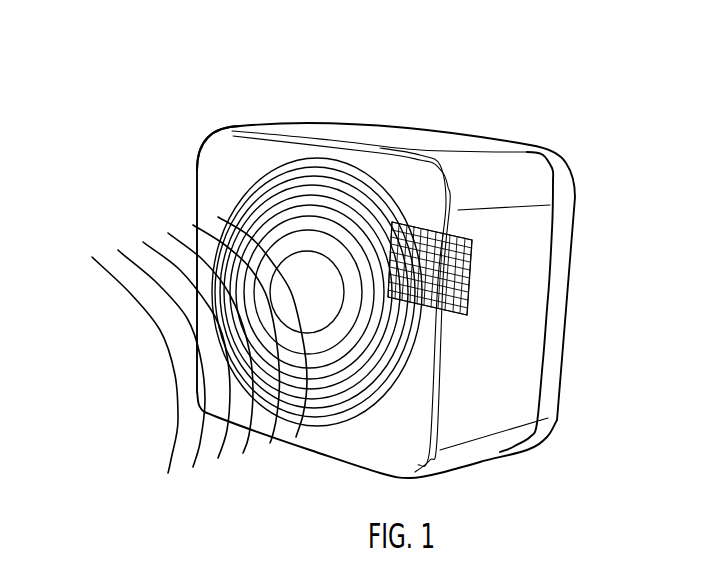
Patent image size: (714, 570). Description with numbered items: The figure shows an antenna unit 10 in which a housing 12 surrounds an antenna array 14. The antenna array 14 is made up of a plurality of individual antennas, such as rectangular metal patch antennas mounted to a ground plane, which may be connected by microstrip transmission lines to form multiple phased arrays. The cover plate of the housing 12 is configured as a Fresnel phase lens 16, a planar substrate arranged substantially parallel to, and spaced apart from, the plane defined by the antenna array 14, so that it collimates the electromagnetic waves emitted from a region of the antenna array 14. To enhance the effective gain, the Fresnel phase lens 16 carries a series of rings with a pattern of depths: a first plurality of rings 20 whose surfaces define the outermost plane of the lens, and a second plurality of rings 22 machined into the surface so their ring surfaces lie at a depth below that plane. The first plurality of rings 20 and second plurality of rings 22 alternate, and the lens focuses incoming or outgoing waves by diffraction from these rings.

The antenna unit 10 is at (160, 111).
The housing 12 is at (317, 126).
The antenna array 14 is at (484, 276).
The Fresnel phase lens 16 is at (218, 168).
The first plurality of rings 20 is at (307, 290).
The second plurality of rings 22 is at (350, 297).